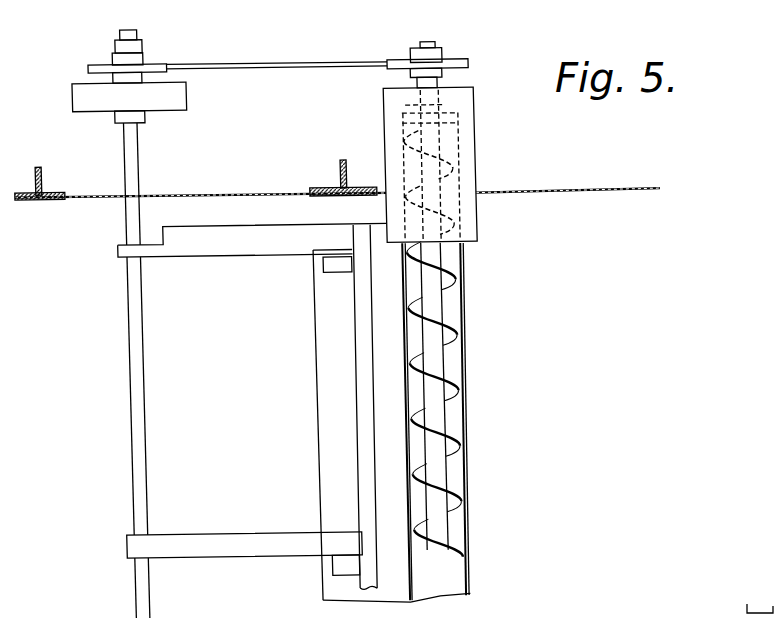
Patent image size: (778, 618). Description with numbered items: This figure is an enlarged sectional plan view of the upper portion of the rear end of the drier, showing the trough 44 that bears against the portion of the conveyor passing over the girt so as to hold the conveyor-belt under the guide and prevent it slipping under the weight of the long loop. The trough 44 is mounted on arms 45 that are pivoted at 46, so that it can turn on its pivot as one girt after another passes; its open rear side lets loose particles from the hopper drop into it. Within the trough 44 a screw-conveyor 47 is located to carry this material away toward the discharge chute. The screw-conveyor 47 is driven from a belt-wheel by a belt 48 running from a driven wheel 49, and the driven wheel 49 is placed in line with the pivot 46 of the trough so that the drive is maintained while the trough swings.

The trough 44 is at (460, 290).
The arms 45 is at (187, 248).
The pivot 46 is at (133, 386).
The screw-conveyor 47 is at (444, 344).
The belt 48 is at (317, 67).
The driven wheel 49 is at (129, 76).